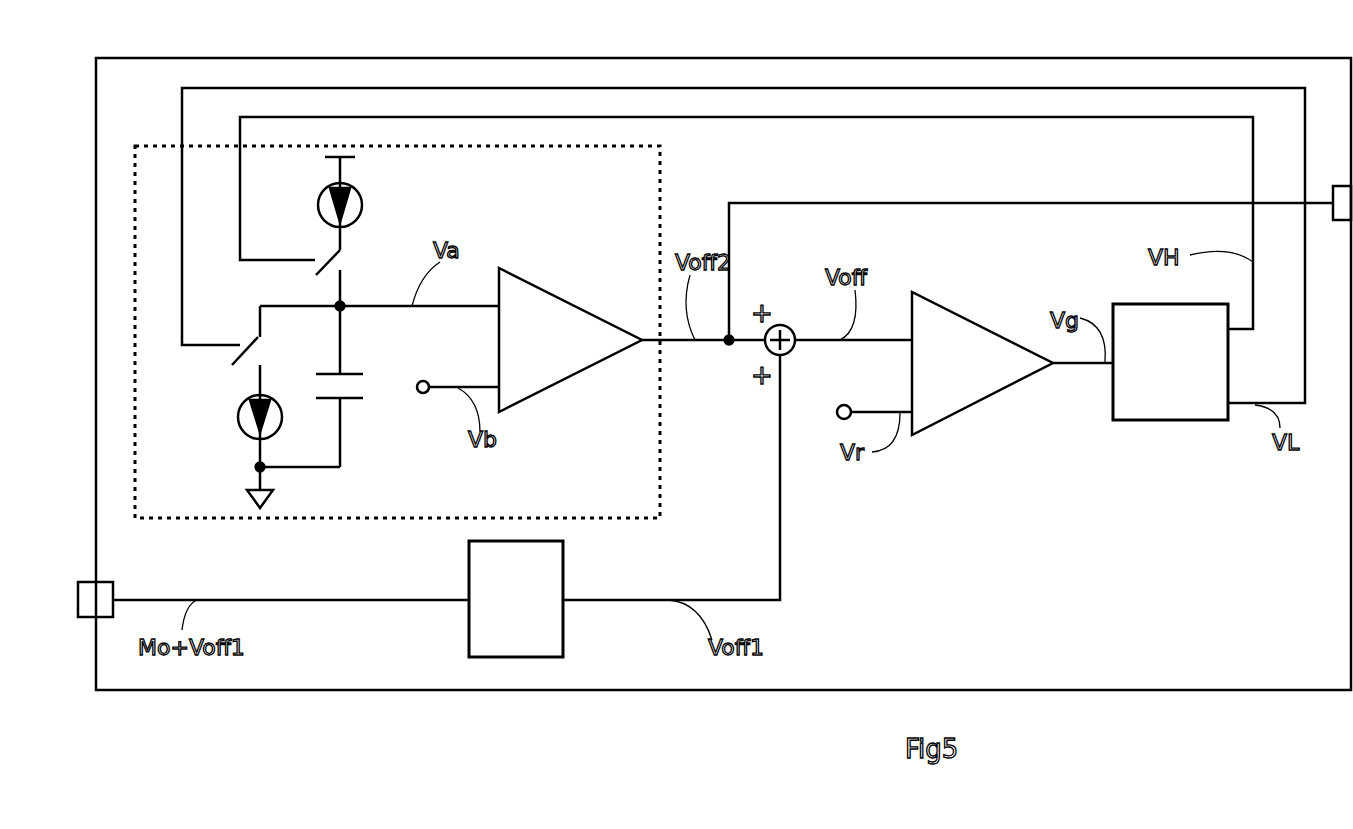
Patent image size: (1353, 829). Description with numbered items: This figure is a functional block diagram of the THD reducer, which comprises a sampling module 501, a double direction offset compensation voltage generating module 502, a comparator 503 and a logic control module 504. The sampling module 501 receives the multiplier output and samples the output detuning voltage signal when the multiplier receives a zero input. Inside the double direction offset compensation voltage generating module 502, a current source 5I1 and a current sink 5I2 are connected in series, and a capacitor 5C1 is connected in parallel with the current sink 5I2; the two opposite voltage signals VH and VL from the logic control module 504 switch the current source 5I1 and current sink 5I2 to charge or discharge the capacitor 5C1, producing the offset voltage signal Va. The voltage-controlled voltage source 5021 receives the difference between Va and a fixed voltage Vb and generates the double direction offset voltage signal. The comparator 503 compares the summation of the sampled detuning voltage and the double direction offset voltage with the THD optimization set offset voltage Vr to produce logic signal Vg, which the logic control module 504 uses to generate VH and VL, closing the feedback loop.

The sampling module 501 is at (469, 620).
The double direction offset compensation voltage generating module 502 is at (662, 473).
The voltage-controlled voltage source 5021 is at (557, 290).
The comparator 503 is at (970, 318).
The logic control module 504 is at (1172, 423).
The current source 5I1 is at (362, 205).
The current sink 5I2 is at (238, 415).
The capacitor 5C1 is at (353, 410).